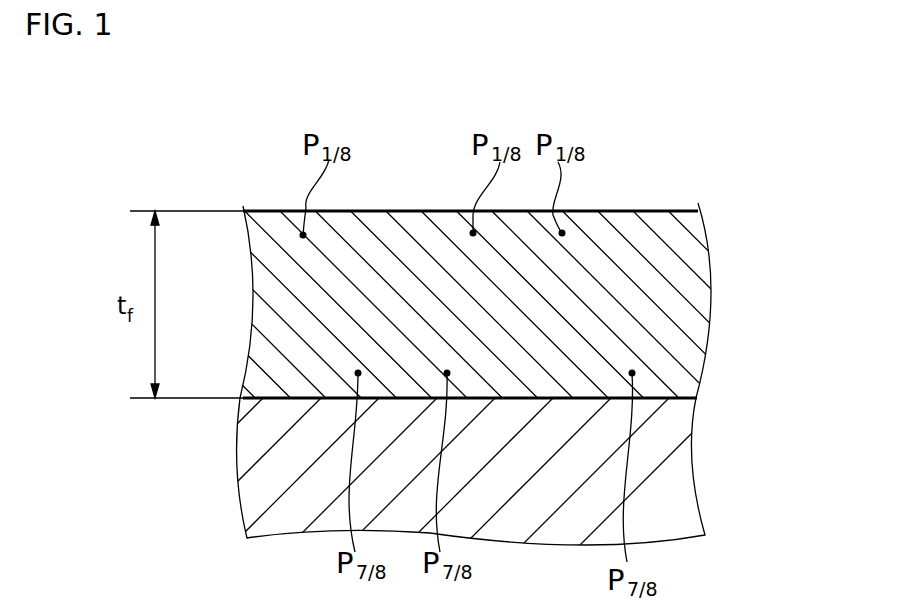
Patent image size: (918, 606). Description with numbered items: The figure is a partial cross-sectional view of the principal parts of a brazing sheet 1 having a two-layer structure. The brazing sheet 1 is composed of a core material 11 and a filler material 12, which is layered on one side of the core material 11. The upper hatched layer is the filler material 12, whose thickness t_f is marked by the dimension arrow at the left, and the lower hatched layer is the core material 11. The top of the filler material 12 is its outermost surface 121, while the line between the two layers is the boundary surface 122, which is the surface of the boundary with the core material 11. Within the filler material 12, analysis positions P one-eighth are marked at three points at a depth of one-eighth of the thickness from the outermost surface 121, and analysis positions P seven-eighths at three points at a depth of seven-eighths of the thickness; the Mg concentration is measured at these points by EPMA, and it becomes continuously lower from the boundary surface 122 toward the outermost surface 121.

The brazing sheet 1 is at (612, 145).
The core material 11 is at (657, 445).
The filler material 12 is at (645, 242).
The outermost surface 121 is at (587, 210).
The boundary surface 122 is at (657, 398).